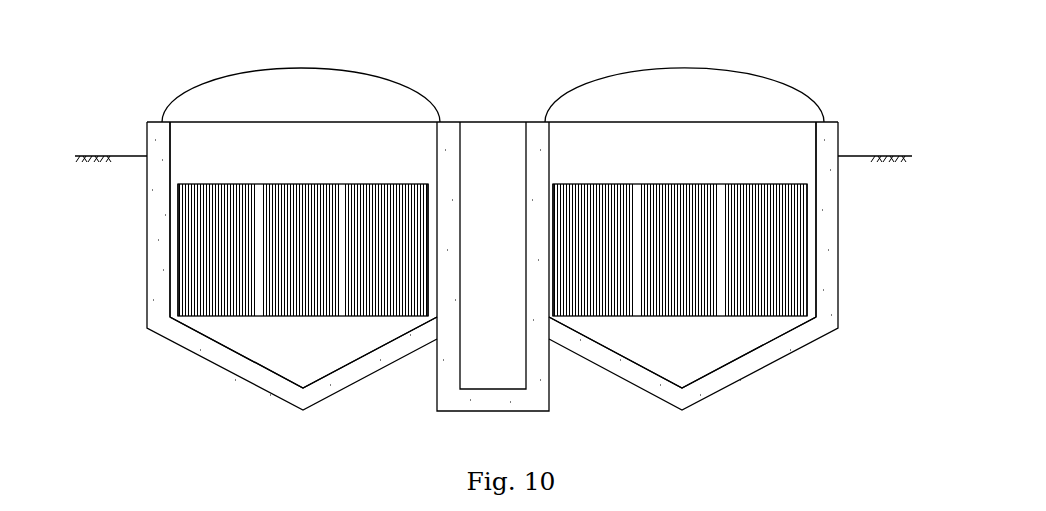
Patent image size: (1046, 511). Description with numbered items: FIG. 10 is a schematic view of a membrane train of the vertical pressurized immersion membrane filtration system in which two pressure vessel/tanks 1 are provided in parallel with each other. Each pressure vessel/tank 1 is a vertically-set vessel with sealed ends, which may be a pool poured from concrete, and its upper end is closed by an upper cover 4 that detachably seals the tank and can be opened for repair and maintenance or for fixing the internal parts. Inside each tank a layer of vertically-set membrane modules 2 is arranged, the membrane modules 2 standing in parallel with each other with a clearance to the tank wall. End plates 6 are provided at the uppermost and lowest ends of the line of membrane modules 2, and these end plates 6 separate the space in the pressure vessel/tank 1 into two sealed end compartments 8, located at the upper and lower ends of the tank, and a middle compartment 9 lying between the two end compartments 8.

The pressure vessel/tank 1 is at (148, 232).
The membrane module 2 is at (205, 218).
The upper cover 4 is at (303, 67).
The end plate 6 is at (175, 184).
The end compartment 8 is at (263, 88).
The middle compartment 9 is at (176, 277).